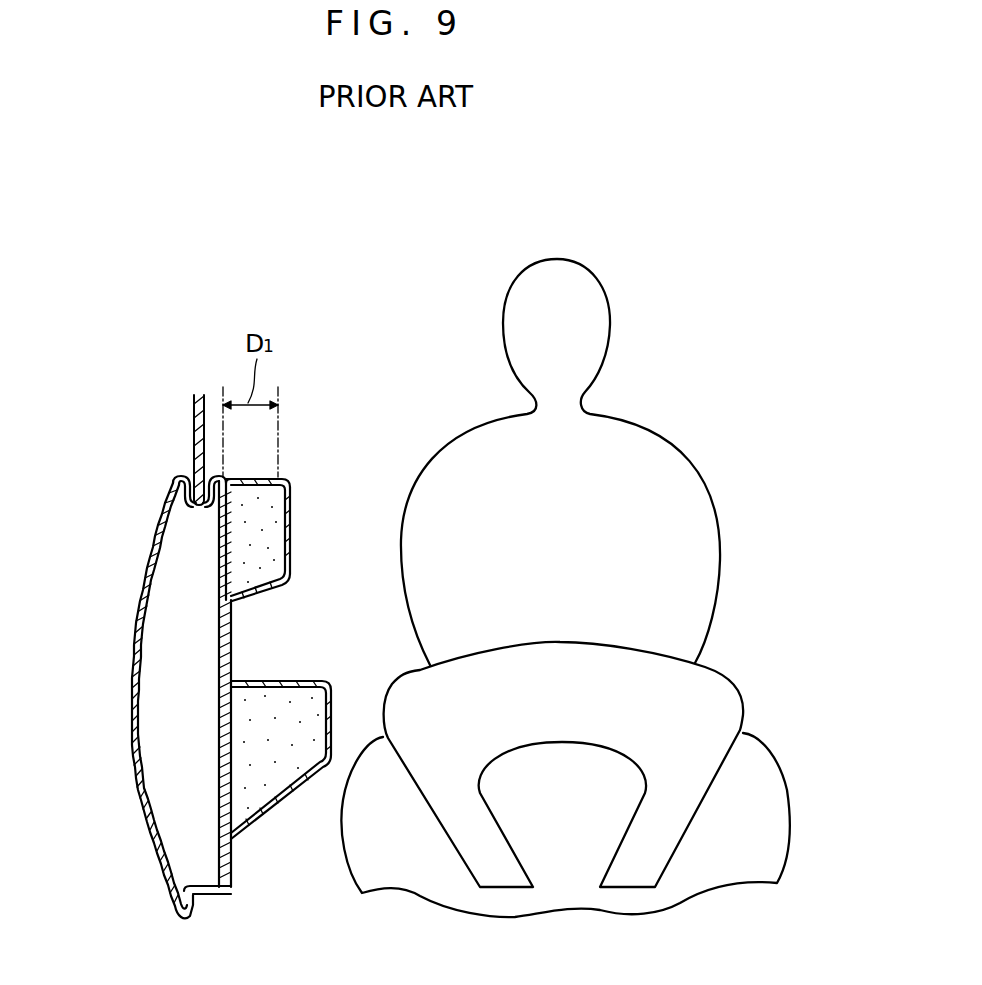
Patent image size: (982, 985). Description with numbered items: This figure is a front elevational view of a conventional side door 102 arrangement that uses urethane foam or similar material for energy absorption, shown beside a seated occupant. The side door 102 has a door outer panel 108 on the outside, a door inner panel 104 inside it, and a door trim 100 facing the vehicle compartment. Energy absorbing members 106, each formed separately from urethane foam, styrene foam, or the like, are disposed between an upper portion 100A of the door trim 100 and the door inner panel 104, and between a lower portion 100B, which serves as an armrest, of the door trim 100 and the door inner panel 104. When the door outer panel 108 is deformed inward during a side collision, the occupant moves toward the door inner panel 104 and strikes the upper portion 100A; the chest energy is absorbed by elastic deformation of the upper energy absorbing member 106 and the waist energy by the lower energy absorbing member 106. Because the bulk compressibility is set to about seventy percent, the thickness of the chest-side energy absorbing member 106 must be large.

The door trim 100 is at (312, 657).
The upper portion of the door trim 100A is at (289, 503).
The lower portion (armrest) of the door trim 100B is at (286, 684).
The side door 102 is at (168, 478).
The door inner panel 104 is at (219, 742).
The energy absorbing member 106 is at (272, 564).
The door outer panel 108 is at (134, 742).